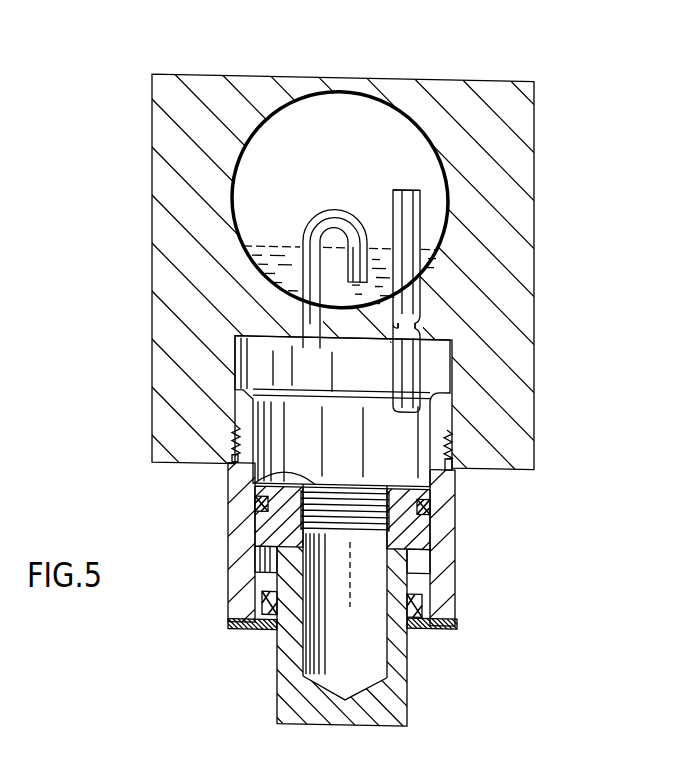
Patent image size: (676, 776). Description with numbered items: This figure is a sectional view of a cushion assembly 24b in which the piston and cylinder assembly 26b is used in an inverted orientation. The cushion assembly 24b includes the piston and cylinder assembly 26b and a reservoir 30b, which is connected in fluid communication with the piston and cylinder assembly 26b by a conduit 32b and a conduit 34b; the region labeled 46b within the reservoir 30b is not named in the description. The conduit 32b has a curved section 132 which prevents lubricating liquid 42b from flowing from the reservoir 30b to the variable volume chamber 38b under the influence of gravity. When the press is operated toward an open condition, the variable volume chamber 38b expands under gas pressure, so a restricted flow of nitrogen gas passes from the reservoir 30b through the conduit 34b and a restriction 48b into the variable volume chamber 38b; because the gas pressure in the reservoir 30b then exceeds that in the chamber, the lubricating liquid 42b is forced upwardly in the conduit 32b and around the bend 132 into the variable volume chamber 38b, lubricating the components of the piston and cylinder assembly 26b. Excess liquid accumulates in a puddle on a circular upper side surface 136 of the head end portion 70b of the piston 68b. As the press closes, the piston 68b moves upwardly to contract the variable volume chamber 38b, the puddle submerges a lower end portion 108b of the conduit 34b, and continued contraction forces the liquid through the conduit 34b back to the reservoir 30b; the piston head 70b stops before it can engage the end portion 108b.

The cushion assembly 24b is at (550, 99).
The reservoir 30b is at (394, 86).
The gas space 46b is at (322, 113).
The lubricating liquid 42b is at (258, 263).
The conduit 32b is at (306, 205).
The curved section 132 is at (333, 216).
The conduit 34b is at (400, 178).
The restriction 48b is at (403, 314).
The lower end portion 108b is at (405, 410).
The variable volume chamber 38b is at (258, 353).
The circular upper side surface 136 is at (270, 468).
The head end portion 70b is at (410, 519).
The piston and cylinder assembly 26b is at (466, 560).
The piston 68b is at (412, 680).